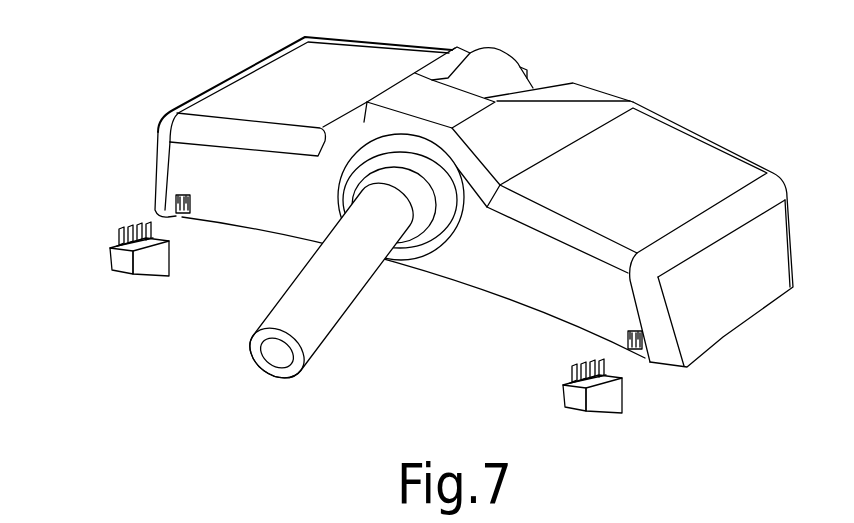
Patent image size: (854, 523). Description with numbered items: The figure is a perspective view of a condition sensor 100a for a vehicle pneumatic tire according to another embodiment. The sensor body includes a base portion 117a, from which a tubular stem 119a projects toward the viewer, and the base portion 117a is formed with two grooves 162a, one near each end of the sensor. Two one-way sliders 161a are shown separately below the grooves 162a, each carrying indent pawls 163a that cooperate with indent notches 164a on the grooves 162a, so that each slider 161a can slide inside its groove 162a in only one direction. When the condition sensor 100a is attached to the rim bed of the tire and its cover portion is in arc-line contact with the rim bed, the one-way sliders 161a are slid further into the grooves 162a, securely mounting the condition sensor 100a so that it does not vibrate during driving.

The condition sensor 100a is at (158, 92).
The base portion 117a is at (670, 153).
The valve stem tube 119a is at (327, 317).
The one-way sliders 161a is at (113, 272).
The grooves 162a is at (187, 217).
The indent pawls 163a is at (156, 240).
The socket terminals 164a is at (178, 220).